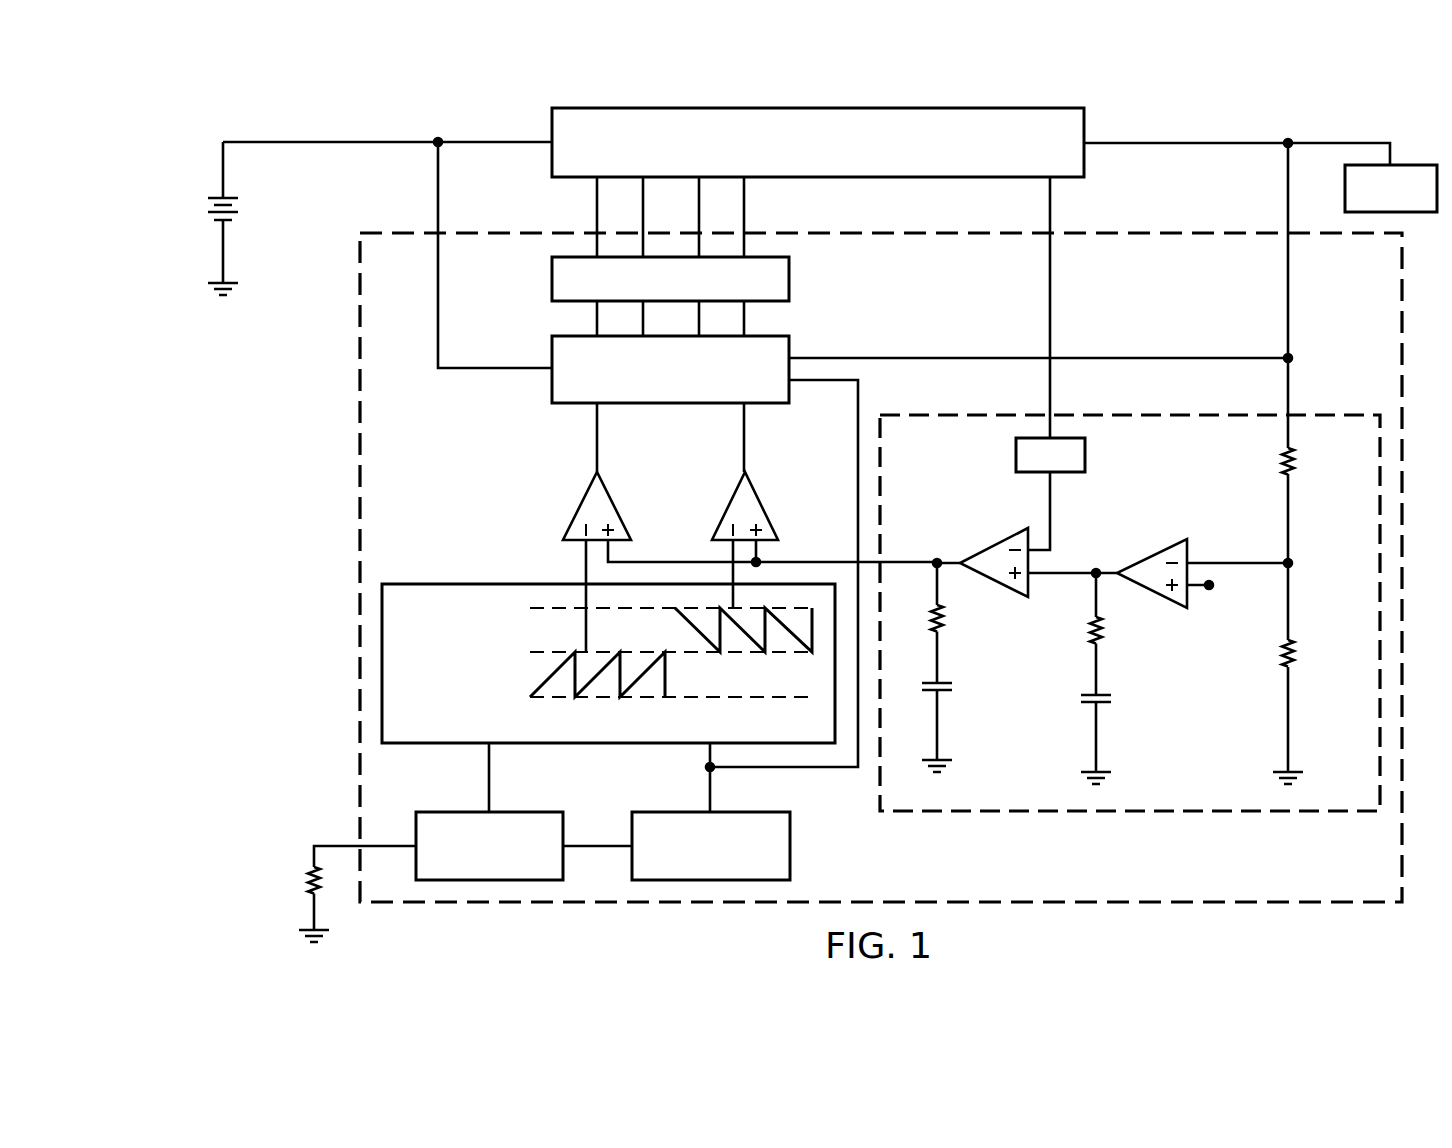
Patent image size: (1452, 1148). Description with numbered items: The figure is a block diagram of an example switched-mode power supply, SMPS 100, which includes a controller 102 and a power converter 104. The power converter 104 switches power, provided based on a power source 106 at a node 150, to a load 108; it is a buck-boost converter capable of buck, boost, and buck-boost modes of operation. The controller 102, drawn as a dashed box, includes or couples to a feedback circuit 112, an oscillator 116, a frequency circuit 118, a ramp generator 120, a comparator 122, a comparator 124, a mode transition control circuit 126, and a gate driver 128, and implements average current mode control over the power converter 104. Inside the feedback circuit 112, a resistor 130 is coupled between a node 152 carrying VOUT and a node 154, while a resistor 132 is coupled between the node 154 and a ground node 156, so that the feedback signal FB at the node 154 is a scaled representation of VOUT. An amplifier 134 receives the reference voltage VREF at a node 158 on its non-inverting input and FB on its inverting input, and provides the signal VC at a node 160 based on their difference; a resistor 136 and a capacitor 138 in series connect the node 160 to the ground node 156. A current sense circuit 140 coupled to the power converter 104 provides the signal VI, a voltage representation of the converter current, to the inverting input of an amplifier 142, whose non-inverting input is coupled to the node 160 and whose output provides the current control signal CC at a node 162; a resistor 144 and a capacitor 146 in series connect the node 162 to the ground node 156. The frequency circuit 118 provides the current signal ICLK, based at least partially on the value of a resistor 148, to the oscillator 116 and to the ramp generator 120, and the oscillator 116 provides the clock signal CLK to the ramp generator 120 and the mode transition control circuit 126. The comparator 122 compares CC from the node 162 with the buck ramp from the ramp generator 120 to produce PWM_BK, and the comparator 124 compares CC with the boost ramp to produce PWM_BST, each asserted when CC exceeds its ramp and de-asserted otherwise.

The SMPS 100 is at (1198, 97).
The controller 102 is at (358, 622).
The power converter 104 is at (550, 128).
The power source 106 is at (200, 212).
The load 108 is at (1406, 163).
The feedback circuit 112 is at (1130, 813).
The oscillator 116 is at (678, 811).
The frequency circuit 118 is at (458, 811).
The ramp generator 120 is at (604, 745).
The comparator 122 is at (582, 500).
The comparator 124 is at (727, 500).
The mode transition control circuit 126 is at (550, 357).
The gate driver 128 is at (550, 279).
The resistor 130 is at (1296, 456).
The resistor 132 is at (1296, 657).
The amplifier 134 is at (1152, 555).
The resistor 136 is at (1104, 636).
The capacitor 138 is at (1112, 700).
The current sense circuit 140 is at (1014, 452).
The amplifier 142 is at (996, 545).
The resistor 144 is at (945, 622).
The capacitor 146 is at (955, 688).
The resistor 148 is at (306, 885).
The node 150 is at (436, 150).
The node 152 is at (1291, 357).
The node 154 is at (1292, 562).
The ground node 156 is at (210, 291).
The node 158 is at (1212, 592).
The node 160 is at (1093, 578).
The node 162 is at (935, 558).